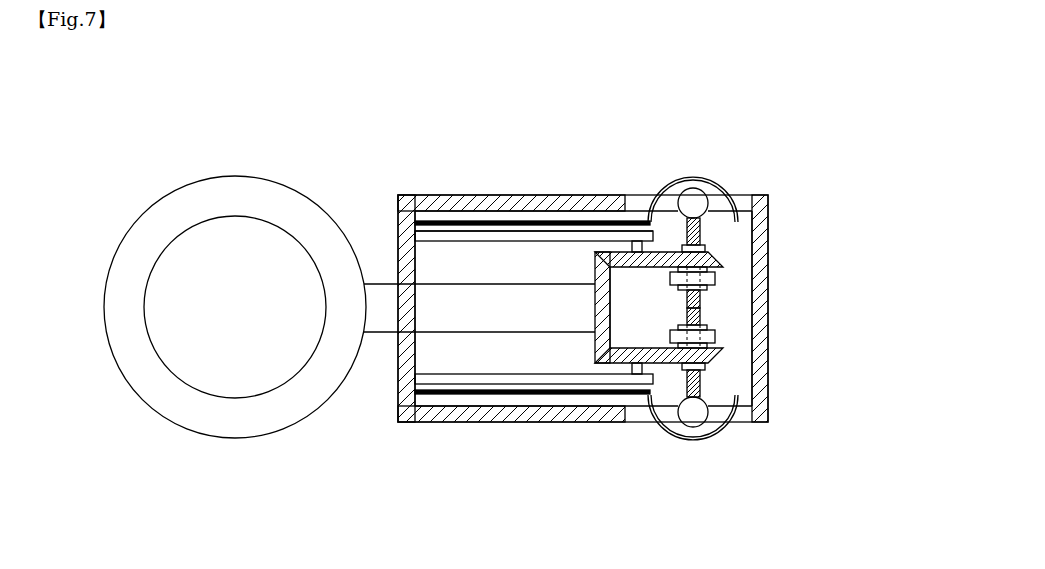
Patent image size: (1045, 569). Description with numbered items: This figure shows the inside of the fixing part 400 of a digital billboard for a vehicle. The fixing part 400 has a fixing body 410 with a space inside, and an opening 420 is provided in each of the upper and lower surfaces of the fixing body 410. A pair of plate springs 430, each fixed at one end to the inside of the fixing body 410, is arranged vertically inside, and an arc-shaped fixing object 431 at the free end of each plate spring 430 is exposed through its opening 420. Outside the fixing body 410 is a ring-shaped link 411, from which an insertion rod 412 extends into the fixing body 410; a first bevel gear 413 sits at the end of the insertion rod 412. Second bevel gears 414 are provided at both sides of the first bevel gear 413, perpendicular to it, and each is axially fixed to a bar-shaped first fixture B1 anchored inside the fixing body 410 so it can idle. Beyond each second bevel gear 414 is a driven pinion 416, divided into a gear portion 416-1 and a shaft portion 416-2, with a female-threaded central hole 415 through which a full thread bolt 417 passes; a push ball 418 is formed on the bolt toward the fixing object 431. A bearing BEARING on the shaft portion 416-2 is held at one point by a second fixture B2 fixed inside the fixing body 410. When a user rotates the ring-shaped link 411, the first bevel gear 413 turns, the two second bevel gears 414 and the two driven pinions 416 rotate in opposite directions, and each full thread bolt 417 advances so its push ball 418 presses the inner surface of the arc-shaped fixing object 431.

The fixing part 400 is at (409, 130).
The fixing body 410 is at (540, 200).
The ring-shaped link 411 is at (252, 420).
The insertion rod 412 is at (486, 313).
The first bevel gear 413 is at (598, 363).
The second bevel gear 414 is at (634, 374).
The central hole 415 is at (695, 430).
The driven pinion 416 is at (772, 320).
The gear portion 416-1 is at (712, 356).
The shaft portion 416-2 is at (716, 338).
The full thread bolt 417 is at (702, 298).
The push ball 418 is at (708, 201).
The opening 420 is at (634, 200).
The plate spring 430 is at (582, 220).
The arc-shaped fixing object 431 is at (693, 179).
The first fixture B1 is at (452, 237).
The second fixture B2 is at (716, 280).
The bearing BEARING is at (716, 333).